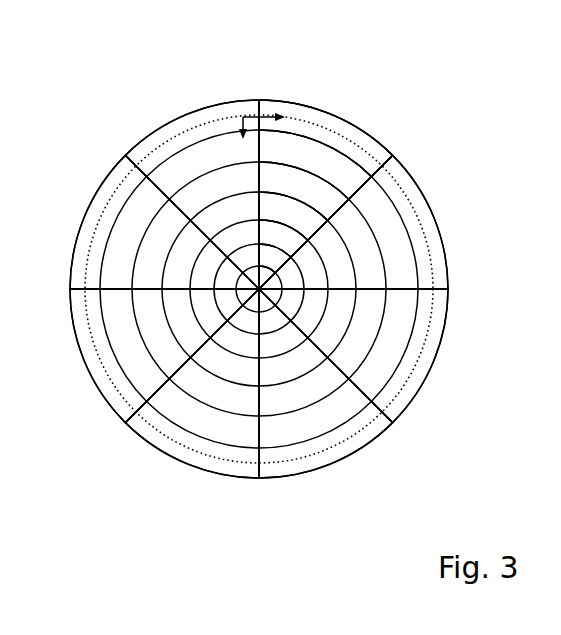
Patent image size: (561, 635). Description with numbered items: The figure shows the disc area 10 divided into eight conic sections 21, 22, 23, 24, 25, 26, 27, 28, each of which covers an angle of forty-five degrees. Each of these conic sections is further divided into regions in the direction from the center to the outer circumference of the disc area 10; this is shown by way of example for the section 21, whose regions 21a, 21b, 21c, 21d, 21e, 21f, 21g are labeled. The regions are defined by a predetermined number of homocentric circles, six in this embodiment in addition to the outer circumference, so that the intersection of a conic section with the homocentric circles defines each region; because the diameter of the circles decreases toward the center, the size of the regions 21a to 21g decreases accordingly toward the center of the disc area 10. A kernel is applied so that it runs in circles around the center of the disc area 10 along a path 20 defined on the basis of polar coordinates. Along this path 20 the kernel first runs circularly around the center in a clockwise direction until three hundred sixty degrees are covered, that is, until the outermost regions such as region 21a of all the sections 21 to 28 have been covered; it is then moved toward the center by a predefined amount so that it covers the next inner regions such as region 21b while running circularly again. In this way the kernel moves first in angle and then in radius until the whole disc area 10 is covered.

The disc area 10 is at (127, 88).
The path 20 is at (266, 116).
The conic section 21 is at (333, 110).
The region 21a is at (363, 133).
The region 21b is at (315, 164).
The region 21c is at (304, 191).
The region 21d is at (293, 216).
The region 21e is at (283, 238).
The region 21f is at (280, 255).
The region 21g is at (270, 268).
The conic section 22 is at (427, 197).
The conic section 23 is at (442, 338).
The conic section 24 is at (328, 462).
The conic section 25 is at (158, 448).
The conic section 26 is at (88, 368).
The conic section 27 is at (83, 217).
The conic section 28 is at (193, 108).